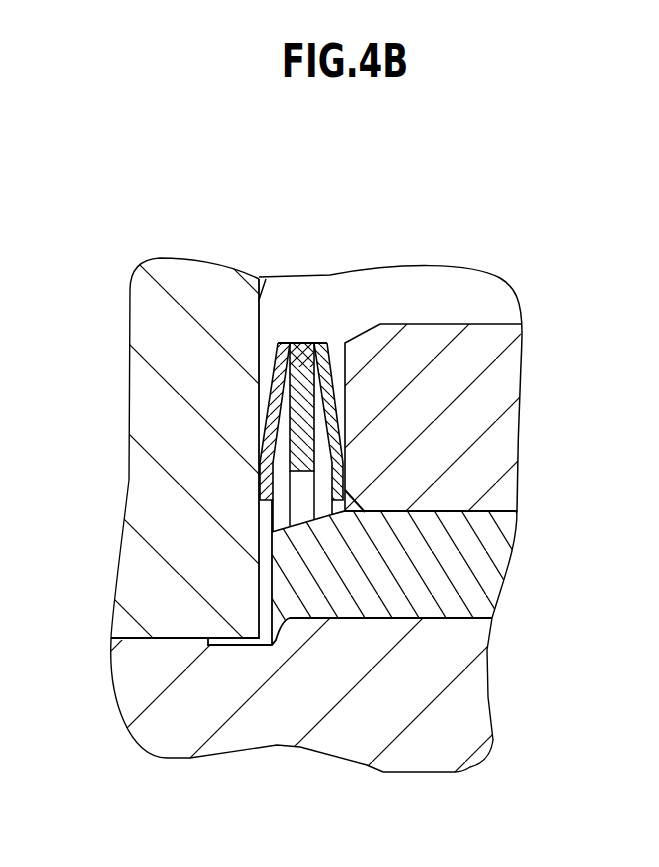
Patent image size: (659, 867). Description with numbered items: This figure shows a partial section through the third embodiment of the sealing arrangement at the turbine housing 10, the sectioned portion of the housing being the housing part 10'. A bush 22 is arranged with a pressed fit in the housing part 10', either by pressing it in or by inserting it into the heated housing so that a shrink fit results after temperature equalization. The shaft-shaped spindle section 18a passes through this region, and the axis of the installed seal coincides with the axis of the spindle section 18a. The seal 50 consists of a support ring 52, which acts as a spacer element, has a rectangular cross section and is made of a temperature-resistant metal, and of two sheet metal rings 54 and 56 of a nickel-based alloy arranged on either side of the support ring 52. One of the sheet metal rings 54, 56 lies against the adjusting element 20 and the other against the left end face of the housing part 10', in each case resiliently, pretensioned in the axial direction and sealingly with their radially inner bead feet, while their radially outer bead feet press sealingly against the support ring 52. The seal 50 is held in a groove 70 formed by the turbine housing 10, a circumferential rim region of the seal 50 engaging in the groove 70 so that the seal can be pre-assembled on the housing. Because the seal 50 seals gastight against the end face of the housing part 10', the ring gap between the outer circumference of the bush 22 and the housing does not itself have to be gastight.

The turbine housing 10 is at (390, 359).
The turbine housing part shown in section 10' is at (482, 406).
The shaft-shaped spindle section 18a is at (462, 728).
The adjusting element 20 is at (177, 316).
The bush 22 is at (473, 553).
The seal 50 is at (295, 333).
The support ring 52 is at (308, 342).
The sheet metal ring 54 is at (333, 422).
The sheet metal ring 56 is at (279, 423).
The groove 70 is at (290, 378).